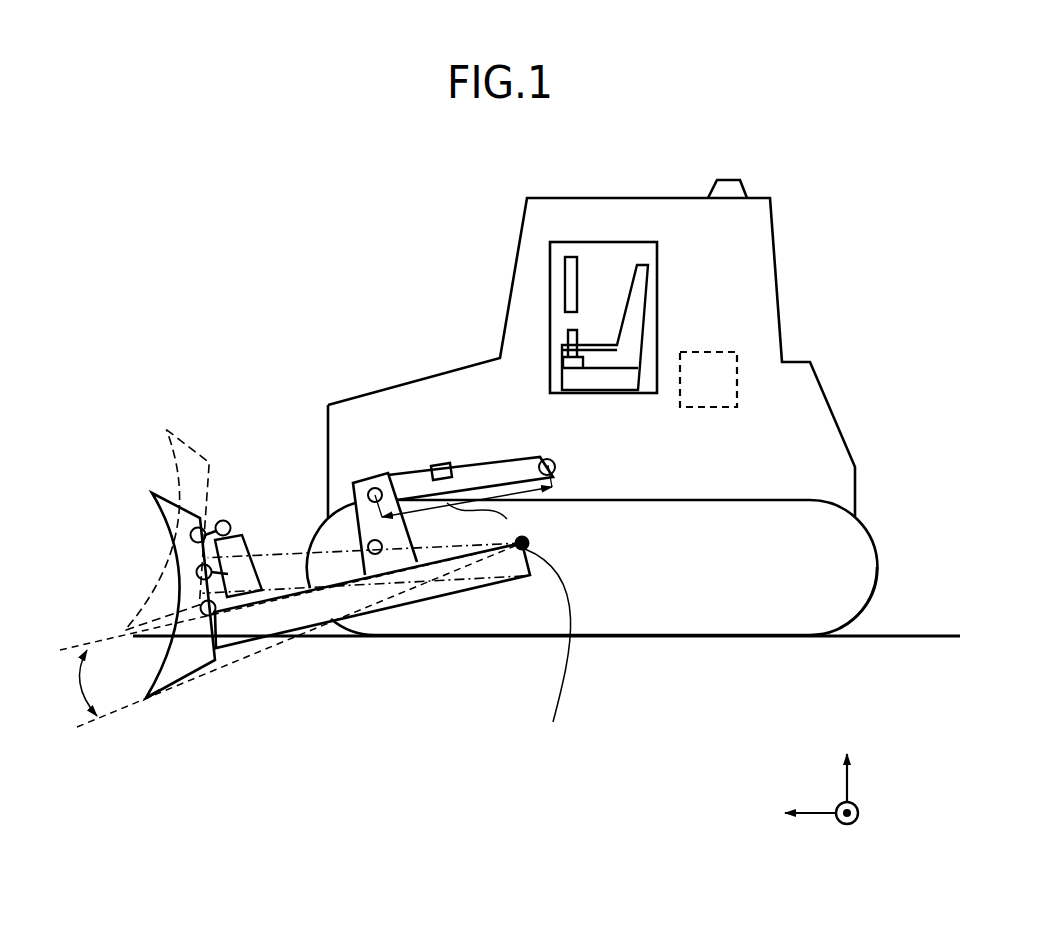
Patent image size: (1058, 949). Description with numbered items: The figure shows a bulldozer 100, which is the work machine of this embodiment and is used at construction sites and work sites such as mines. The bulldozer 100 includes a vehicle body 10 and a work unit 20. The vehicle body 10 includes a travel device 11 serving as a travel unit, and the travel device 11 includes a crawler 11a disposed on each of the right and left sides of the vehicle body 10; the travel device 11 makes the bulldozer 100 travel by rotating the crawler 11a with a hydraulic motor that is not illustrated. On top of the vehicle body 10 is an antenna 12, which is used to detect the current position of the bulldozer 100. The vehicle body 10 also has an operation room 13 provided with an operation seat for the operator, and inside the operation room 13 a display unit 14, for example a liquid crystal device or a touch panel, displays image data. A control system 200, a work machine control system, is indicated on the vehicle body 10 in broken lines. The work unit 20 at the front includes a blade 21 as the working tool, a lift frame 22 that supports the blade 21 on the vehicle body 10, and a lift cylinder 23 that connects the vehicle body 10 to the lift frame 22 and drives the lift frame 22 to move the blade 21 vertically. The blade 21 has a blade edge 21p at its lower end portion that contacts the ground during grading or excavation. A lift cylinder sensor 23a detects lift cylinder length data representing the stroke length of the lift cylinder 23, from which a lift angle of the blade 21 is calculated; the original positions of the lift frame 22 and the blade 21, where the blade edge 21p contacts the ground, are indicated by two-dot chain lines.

The bulldozer 100 is at (845, 212).
The vehicle body 10 is at (650, 198).
The travel device 11 is at (880, 567).
The crawler 11a is at (870, 602).
The antenna 12 is at (732, 180).
The operation room 13 is at (572, 237).
The display unit 14 is at (565, 285).
The control system 200 is at (717, 352).
The work unit 20 is at (293, 703).
The blade 21 is at (204, 668).
The blade edge 21p is at (148, 703).
The lift frame 22 is at (312, 623).
The lift cylinder 23 is at (490, 462).
The lift cylinder sensor 23a is at (440, 462).